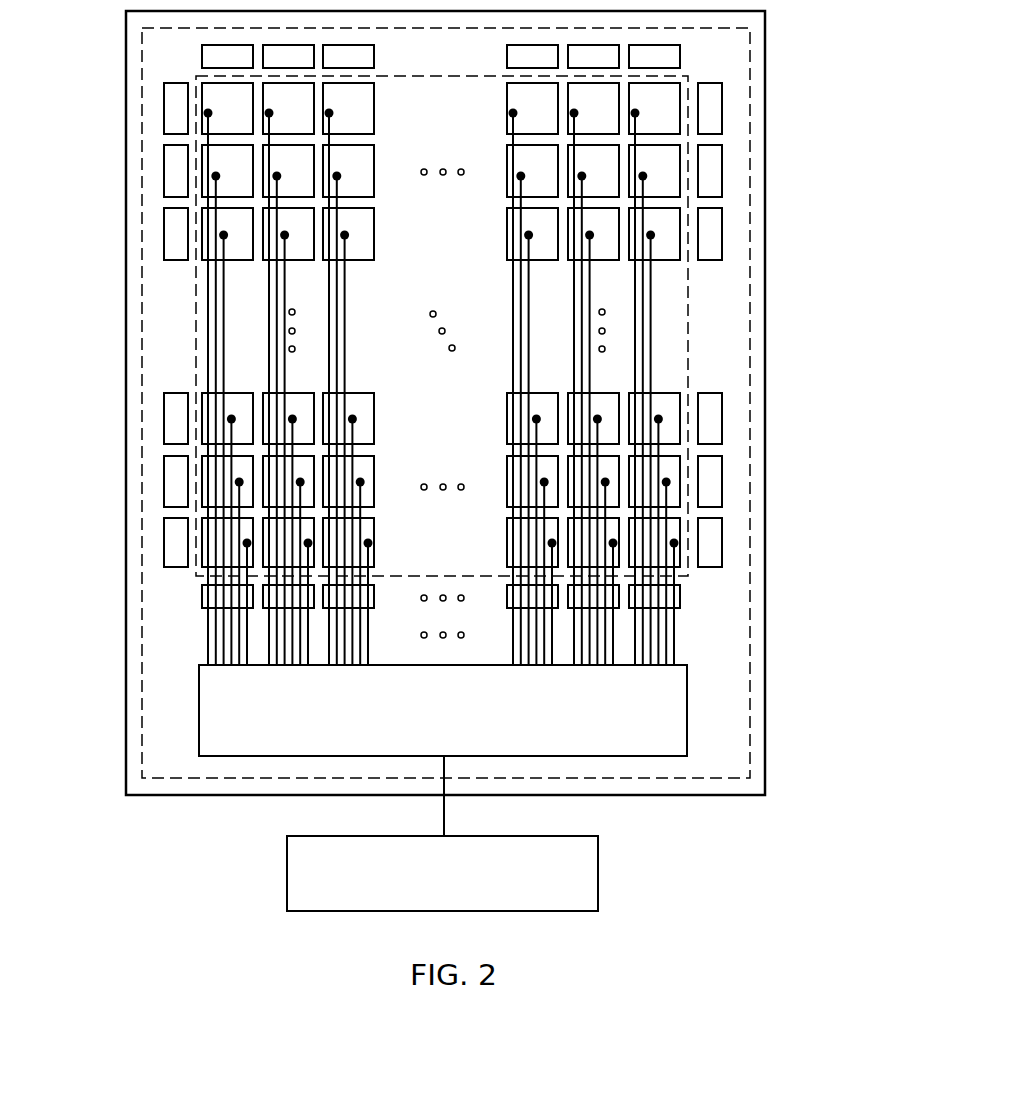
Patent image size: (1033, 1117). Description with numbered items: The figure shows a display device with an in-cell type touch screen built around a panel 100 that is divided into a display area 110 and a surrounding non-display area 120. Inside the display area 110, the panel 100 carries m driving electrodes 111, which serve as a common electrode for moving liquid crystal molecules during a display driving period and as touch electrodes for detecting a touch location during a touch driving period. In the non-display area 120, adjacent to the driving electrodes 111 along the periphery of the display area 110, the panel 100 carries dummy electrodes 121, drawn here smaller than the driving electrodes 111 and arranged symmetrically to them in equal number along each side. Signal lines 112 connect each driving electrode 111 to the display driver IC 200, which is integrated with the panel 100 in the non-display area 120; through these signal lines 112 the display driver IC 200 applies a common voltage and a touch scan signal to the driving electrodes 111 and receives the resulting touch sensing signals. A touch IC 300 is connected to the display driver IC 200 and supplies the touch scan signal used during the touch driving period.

The panel 100 is at (765, 70).
The display area 110 is at (688, 278).
The driving electrodes 111 is at (205, 102).
The signal lines 112 is at (207, 288).
The non-display area 120 is at (750, 390).
The dummy electrodes 121 is at (202, 50).
The display driver IC 200 is at (687, 712).
The touch IC 300 is at (598, 870).